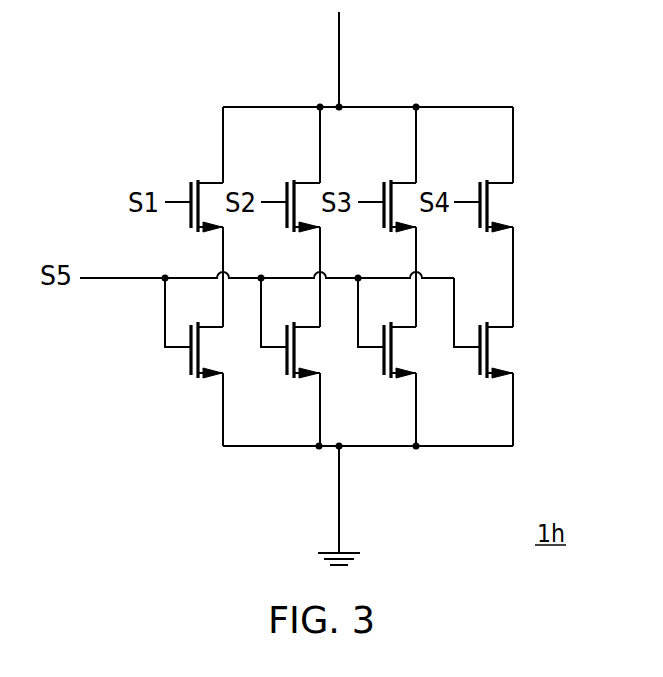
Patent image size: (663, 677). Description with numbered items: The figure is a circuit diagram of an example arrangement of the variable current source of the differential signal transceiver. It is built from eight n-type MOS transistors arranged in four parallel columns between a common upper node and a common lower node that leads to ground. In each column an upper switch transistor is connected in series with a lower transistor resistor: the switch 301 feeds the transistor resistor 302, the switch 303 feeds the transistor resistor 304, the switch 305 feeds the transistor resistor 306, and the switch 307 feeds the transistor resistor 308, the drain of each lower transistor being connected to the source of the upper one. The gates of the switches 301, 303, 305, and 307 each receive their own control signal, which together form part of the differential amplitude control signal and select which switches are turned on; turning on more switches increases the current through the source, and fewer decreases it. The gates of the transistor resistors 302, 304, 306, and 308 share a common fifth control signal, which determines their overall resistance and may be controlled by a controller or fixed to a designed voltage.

The n-type MOS transistor 301 is at (200, 182).
The n-type MOS transistor 302 is at (203, 379).
The n-type MOS transistor 303 is at (296, 182).
The n-type MOS transistor 304 is at (299, 379).
The n-type MOS transistor 305 is at (393, 182).
The n-type MOS transistor 306 is at (396, 379).
The n-type MOS transistor 307 is at (495, 182).
The n-type MOS transistor 308 is at (492, 379).